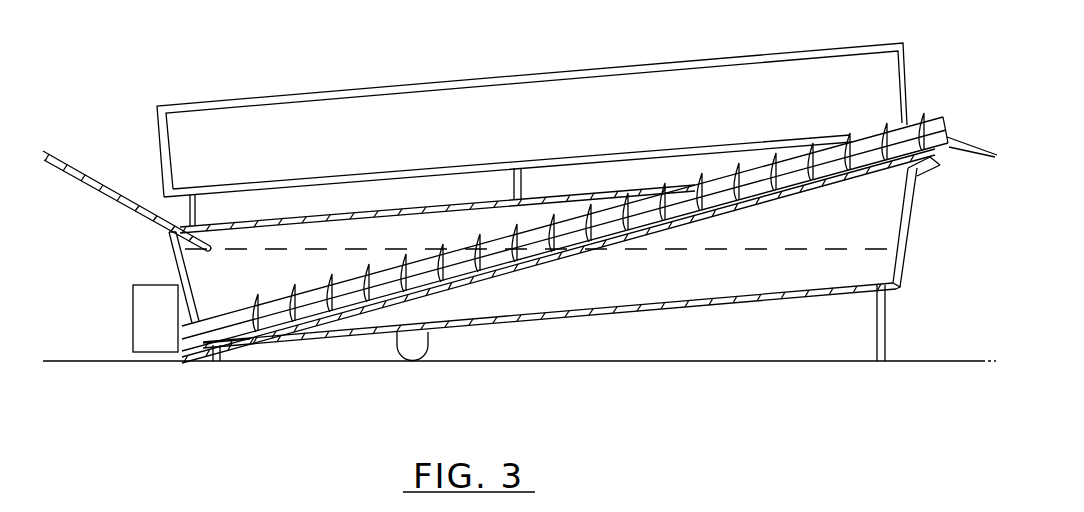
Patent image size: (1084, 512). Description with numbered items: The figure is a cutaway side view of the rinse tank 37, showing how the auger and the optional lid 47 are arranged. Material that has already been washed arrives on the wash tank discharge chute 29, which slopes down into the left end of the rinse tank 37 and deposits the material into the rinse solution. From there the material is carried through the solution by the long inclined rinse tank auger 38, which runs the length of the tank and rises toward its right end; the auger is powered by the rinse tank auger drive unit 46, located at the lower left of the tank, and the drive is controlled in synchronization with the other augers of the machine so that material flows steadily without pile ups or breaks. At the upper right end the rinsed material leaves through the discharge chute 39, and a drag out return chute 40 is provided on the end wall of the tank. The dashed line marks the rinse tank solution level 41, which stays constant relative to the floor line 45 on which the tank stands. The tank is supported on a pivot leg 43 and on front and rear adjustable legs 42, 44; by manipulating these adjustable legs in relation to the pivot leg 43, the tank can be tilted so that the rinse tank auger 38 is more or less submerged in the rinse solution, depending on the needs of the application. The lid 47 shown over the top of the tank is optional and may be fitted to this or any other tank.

The wash tank discharge chute 29 is at (110, 171).
The rinse tank 37 is at (390, 238).
The rinse tank auger 38 is at (914, 112).
The discharge chute 39 is at (952, 134).
The drag out return chute 40 is at (924, 188).
The rinse tank solution level 41 is at (773, 247).
The front adjustable leg 42 is at (897, 317).
The pivot leg 43 is at (432, 343).
The rear adjustable leg 44 is at (199, 357).
The floor line 45 is at (612, 359).
The rinse tank auger drive unit 46 is at (130, 327).
The lid 47 is at (548, 134).